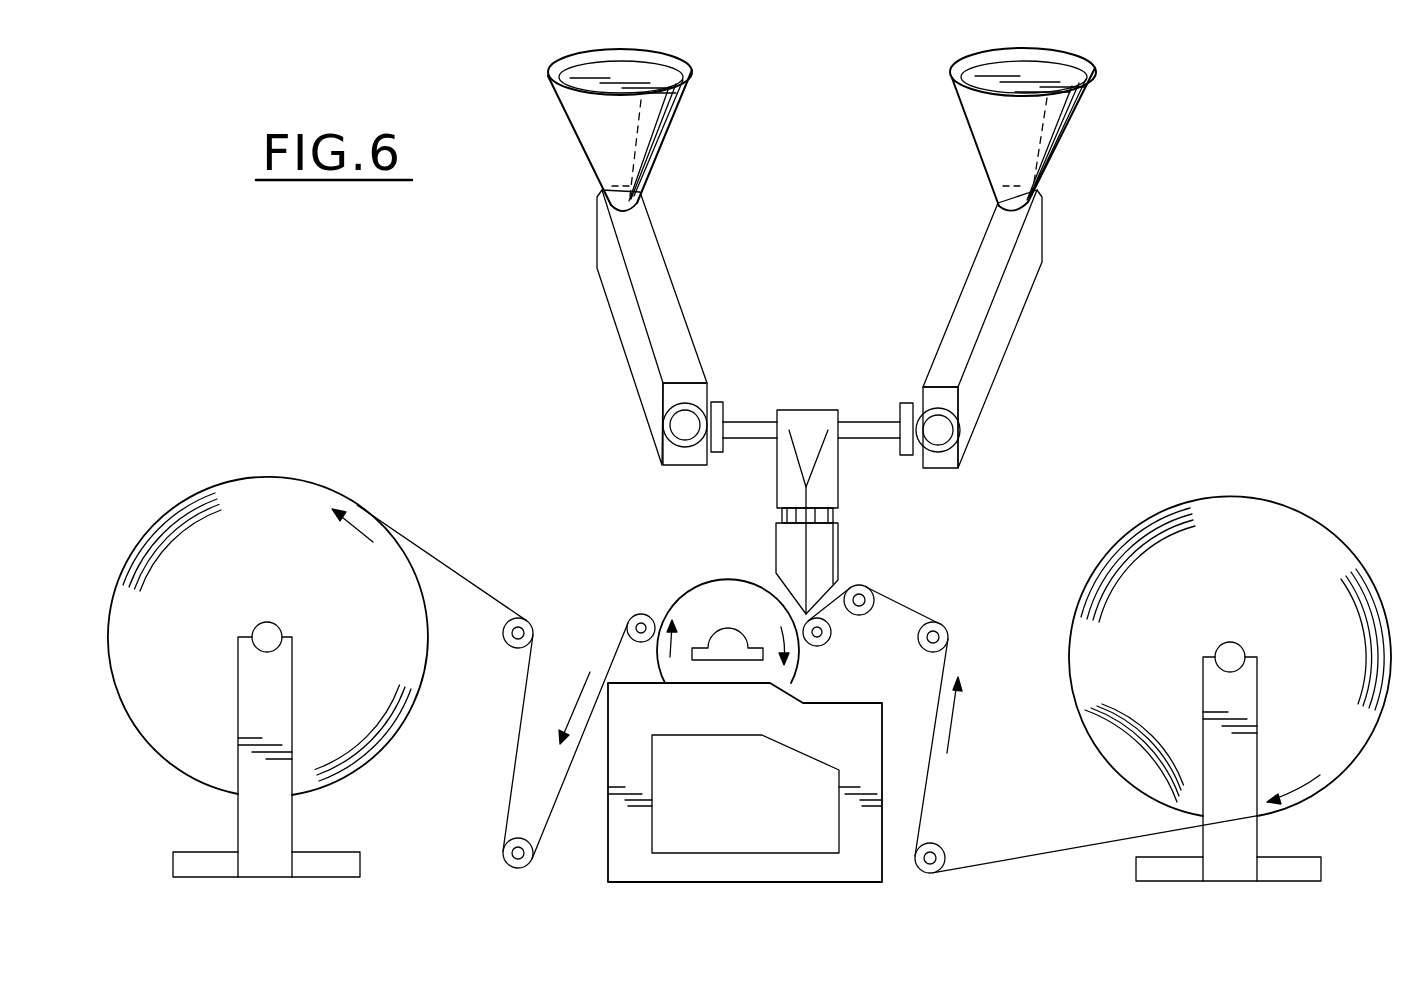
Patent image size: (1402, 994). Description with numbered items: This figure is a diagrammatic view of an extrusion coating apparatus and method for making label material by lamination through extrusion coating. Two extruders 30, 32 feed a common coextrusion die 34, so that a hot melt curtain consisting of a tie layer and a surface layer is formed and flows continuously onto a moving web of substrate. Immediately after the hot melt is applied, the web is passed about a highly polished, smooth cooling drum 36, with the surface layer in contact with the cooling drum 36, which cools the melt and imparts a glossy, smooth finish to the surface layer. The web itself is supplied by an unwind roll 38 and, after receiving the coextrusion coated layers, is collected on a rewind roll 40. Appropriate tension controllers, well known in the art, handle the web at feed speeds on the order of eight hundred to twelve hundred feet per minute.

The extruder 30 is at (628, 357).
The extruder 32 is at (1005, 350).
The coextrusion die 34 is at (838, 545).
The cooling drum 36 is at (718, 583).
The unwind roll 38 is at (1273, 506).
The rewind roll 40 is at (314, 491).